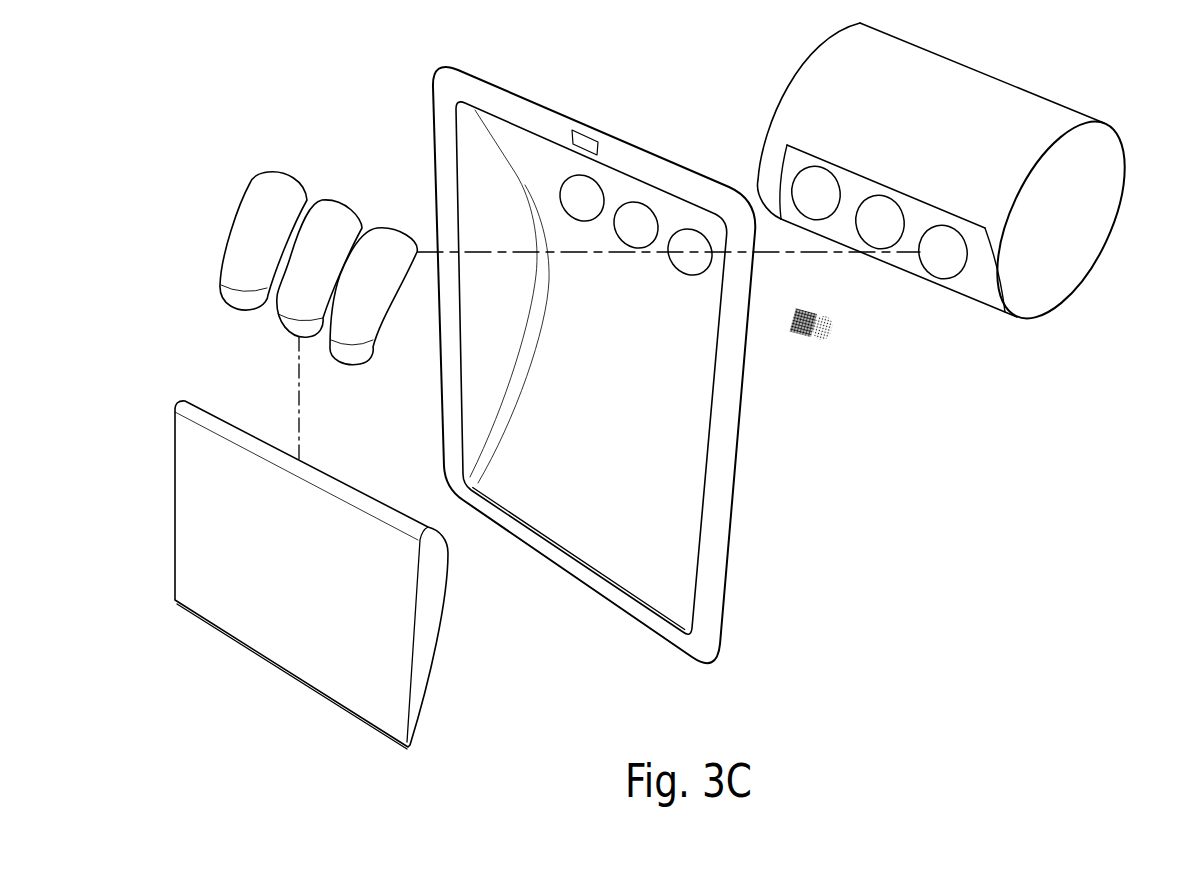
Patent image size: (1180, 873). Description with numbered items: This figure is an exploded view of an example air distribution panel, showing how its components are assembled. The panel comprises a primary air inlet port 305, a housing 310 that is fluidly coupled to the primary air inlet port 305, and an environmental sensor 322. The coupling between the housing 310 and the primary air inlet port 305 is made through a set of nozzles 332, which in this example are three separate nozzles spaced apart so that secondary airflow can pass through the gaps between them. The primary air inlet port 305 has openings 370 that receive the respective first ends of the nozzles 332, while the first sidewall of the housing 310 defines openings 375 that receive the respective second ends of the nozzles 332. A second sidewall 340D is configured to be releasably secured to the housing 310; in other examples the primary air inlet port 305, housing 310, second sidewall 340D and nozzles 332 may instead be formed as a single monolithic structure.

The housing 310 is at (492, 92).
The openings 375 is at (638, 210).
The nozzles 332 is at (253, 210).
The second sidewall 340D is at (200, 502).
The primary air inlet port 305 is at (1058, 118).
The openings 370 is at (945, 227).
The environmental sensor 322 is at (807, 337).